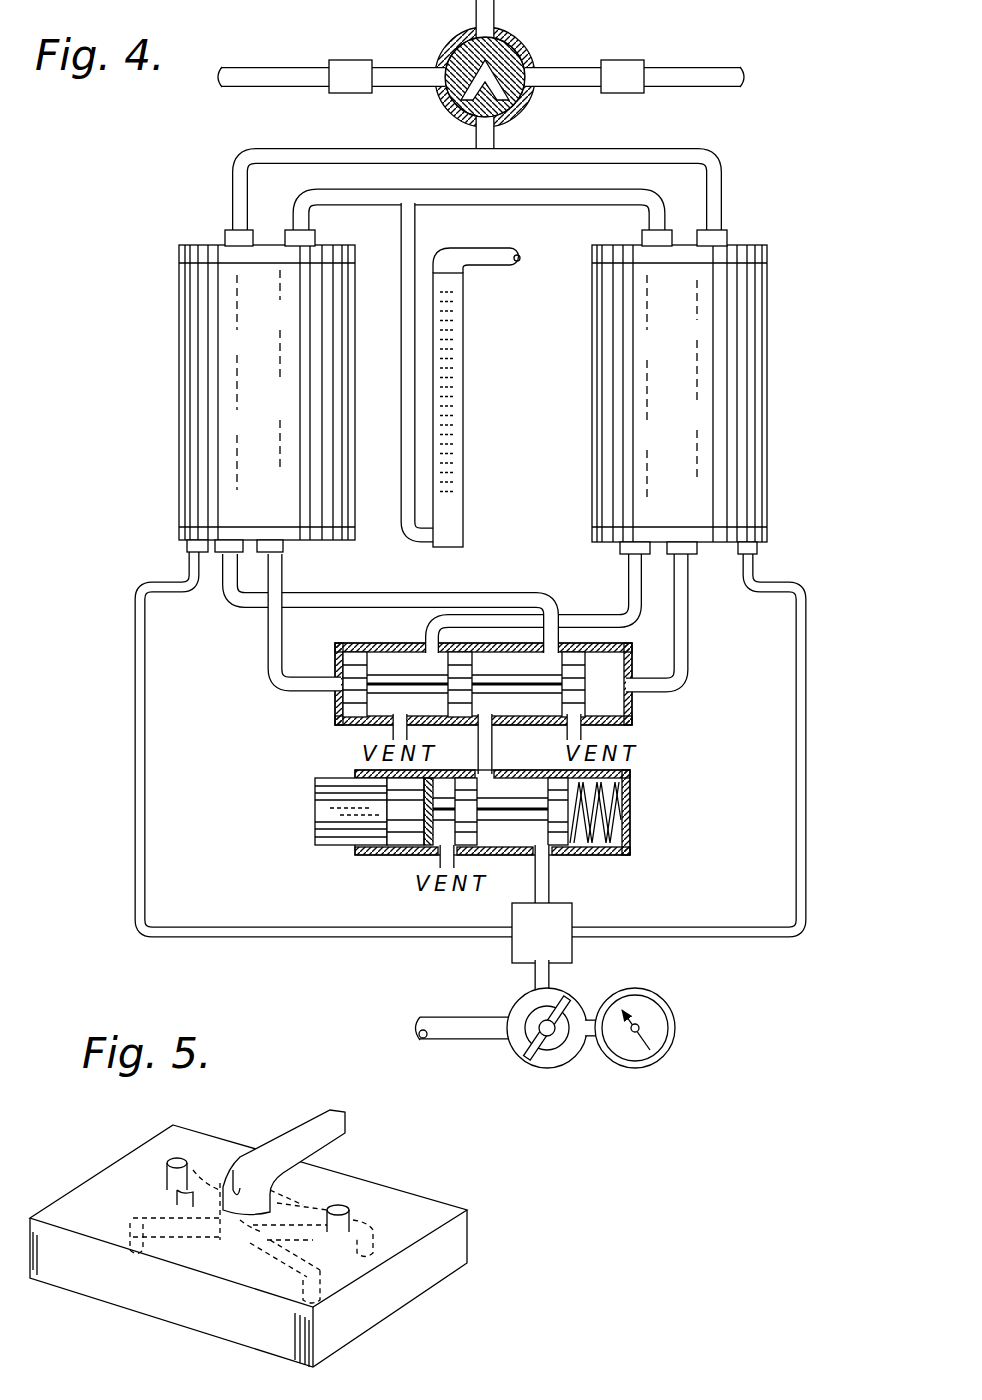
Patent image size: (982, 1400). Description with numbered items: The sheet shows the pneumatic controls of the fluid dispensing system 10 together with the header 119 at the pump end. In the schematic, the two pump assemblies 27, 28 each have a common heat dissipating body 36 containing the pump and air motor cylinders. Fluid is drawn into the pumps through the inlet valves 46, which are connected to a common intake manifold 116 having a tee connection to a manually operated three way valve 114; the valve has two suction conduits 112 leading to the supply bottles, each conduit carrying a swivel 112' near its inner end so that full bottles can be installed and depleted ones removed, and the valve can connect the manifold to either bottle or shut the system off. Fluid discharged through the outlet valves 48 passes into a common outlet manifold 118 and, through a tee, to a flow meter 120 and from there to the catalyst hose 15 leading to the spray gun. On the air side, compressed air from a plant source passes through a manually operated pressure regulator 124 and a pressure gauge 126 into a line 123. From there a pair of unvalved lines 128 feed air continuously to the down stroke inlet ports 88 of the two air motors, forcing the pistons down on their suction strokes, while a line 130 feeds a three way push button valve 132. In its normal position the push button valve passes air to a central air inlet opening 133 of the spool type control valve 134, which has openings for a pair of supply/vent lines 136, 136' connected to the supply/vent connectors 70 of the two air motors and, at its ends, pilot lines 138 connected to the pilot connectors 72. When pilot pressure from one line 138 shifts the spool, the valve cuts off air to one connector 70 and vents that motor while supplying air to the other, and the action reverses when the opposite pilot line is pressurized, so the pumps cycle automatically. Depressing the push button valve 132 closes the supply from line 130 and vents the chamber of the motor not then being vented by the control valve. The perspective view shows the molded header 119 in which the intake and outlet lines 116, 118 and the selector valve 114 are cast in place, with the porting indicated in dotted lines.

In FIG. 4, the fluid dispensing system 10 is at (791, 255).
In FIG. 4, the hose 15 is at (512, 265).
In FIG. 4, the pump assembly 27 is at (773, 318).
In FIG. 4, the pump assembly 28 is at (177, 297).
In FIG. 4, the body 36 is at (188, 427).
In FIG. 4, the inlet valve 46 is at (226, 238).
In FIG. 4, the outlet valve 48 is at (316, 241).
In FIG. 4, the supply/vent connector 70 is at (210, 572).
In FIG. 4, the pilot connector 72 is at (288, 560).
In FIG. 4, the port 88 is at (186, 536).
In FIG. 4, the suction conduit 112 is at (481, 55).
In FIG. 5, the suction conduit 112 is at (296, 1164).
In FIG. 4, the swivel 112' is at (486, 53).
In FIG. 4, the three way valve 114 is at (481, 74).
In FIG. 5, the three way valve 114 is at (333, 1126).
In FIG. 4, the intake manifold 116 is at (590, 158).
In FIG. 5, the intake manifold 116 is at (140, 1218).
In FIG. 4, the outlet manifold 118 is at (403, 334).
In FIG. 5, the outlet manifold 118 is at (300, 1205).
In FIG. 5, the header 119 is at (455, 1235).
In FIG. 4, the flow meter 120 is at (455, 372).
In FIG. 4, the line 123 is at (535, 977).
In FIG. 4, the pressure regulator 124 is at (552, 1068).
In FIG. 4, the pressure gauge 126 is at (660, 1043).
In FIG. 4, the lines 128 is at (134, 652).
In FIG. 4, the line 130 is at (548, 878).
In FIG. 4, the push button valve 132 is at (360, 853).
In FIG. 4, the central air inlet opening 133 is at (493, 749).
In FIG. 4, the control valve 134 is at (636, 713).
In FIG. 4, the supply/vent line 136 is at (390, 603).
In FIG. 4, the supply/vent line 136' is at (535, 603).
In FIG. 4, the pilot line 138 is at (272, 657).